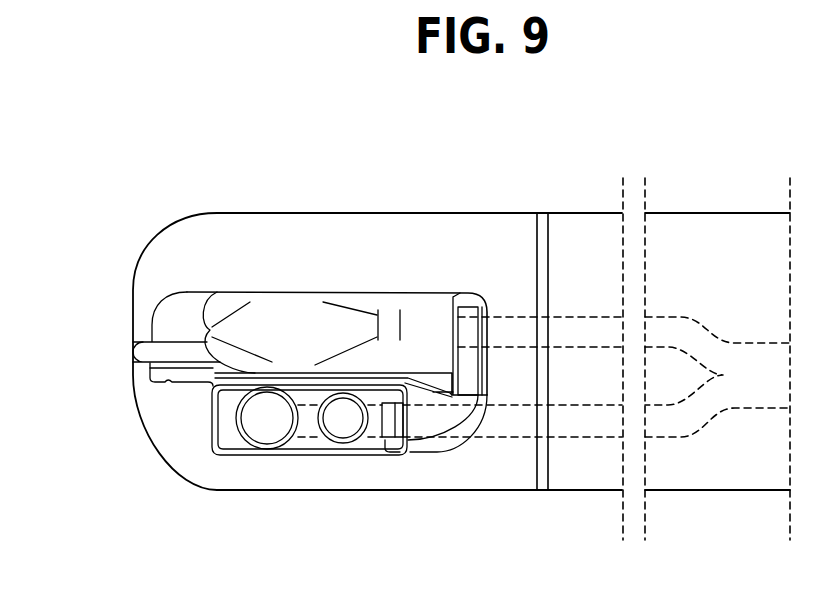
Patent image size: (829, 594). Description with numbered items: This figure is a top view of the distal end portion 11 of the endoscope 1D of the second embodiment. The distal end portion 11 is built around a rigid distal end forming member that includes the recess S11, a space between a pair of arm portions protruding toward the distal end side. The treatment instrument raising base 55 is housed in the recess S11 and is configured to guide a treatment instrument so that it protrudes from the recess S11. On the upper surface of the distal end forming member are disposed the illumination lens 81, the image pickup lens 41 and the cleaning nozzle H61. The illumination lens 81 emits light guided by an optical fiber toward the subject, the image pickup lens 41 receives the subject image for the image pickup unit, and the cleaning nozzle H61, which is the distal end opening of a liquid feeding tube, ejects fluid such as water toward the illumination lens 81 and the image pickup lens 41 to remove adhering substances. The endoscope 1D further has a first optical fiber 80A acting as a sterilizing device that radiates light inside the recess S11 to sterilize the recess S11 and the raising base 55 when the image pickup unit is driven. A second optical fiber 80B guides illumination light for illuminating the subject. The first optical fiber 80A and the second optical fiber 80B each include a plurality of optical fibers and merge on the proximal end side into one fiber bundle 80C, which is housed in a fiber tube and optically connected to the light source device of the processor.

The endoscope 1D is at (107, 203).
The distal end portion 11 is at (143, 441).
The treatment instrument raising base 55 is at (207, 305).
The recess S11 is at (292, 304).
The first optical fiber 80A is at (595, 317).
The second optical fiber 80B is at (587, 440).
The fiber bundle 80C is at (770, 343).
The illumination lens 81 is at (253, 448).
The image pickup lens 41 is at (333, 444).
The cleaning nozzle H61 is at (383, 443).